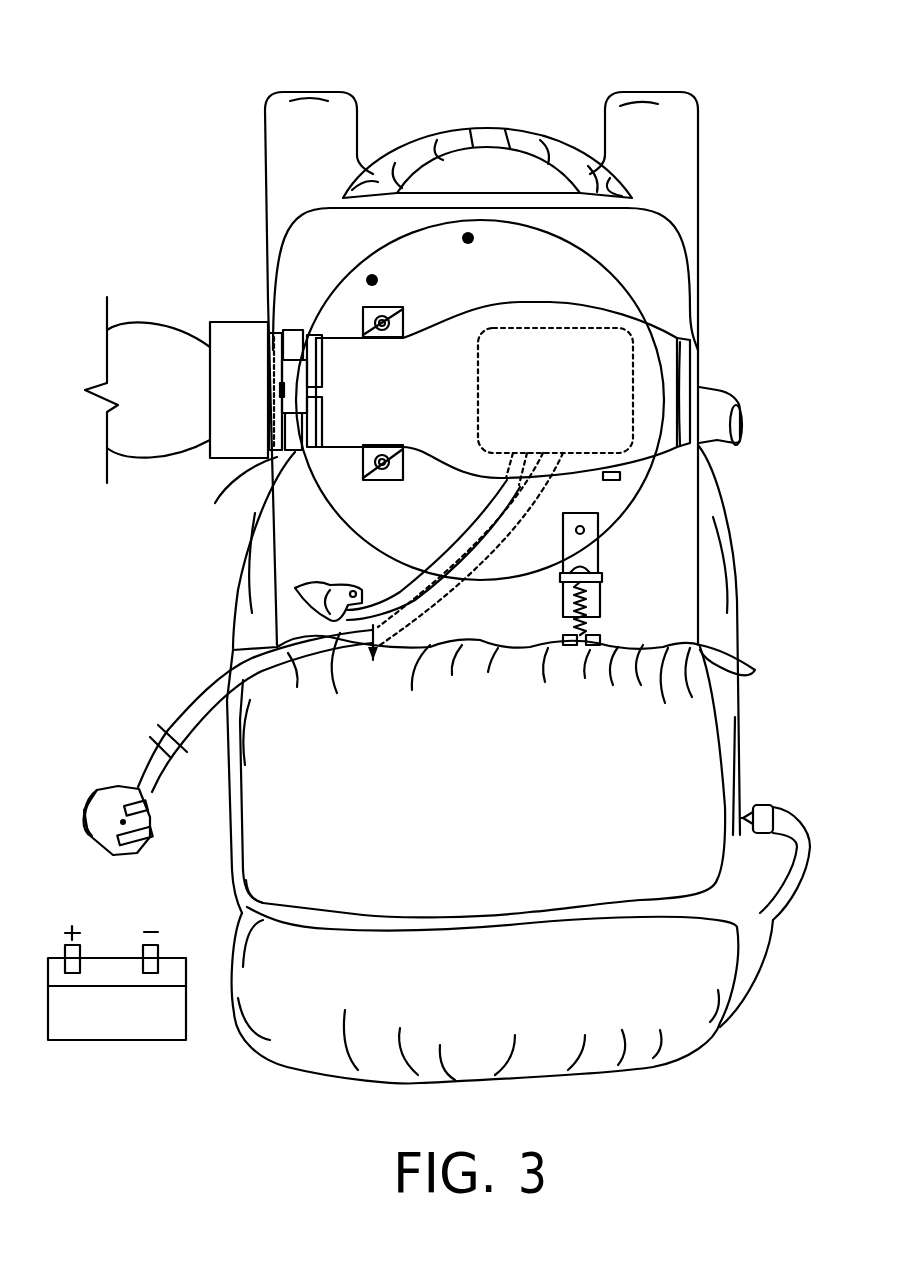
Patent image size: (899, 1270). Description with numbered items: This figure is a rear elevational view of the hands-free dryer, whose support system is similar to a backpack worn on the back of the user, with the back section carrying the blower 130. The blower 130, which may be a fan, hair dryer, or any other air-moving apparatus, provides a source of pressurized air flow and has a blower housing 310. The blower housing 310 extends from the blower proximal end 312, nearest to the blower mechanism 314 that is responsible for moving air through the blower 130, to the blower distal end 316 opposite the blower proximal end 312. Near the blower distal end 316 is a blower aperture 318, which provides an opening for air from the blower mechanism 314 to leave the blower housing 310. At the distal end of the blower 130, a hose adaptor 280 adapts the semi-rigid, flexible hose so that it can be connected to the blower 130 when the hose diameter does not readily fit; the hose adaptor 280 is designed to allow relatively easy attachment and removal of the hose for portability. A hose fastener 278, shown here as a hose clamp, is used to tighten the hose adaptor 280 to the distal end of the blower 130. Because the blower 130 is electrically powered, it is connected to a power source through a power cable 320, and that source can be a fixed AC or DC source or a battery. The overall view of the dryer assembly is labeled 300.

The backpack blower system 300 is at (170, 68).
The hose adaptor 280 is at (208, 347).
The blower aperture 318 is at (273, 345).
The hose fastener 278 is at (300, 450).
The blower distal end 316 is at (343, 337).
The blower housing 310 is at (467, 318).
The blower 130 is at (667, 327).
The blower mechanism 314 is at (533, 328).
The blower proximal end 312 is at (699, 360).
The power cable 320 is at (195, 695).